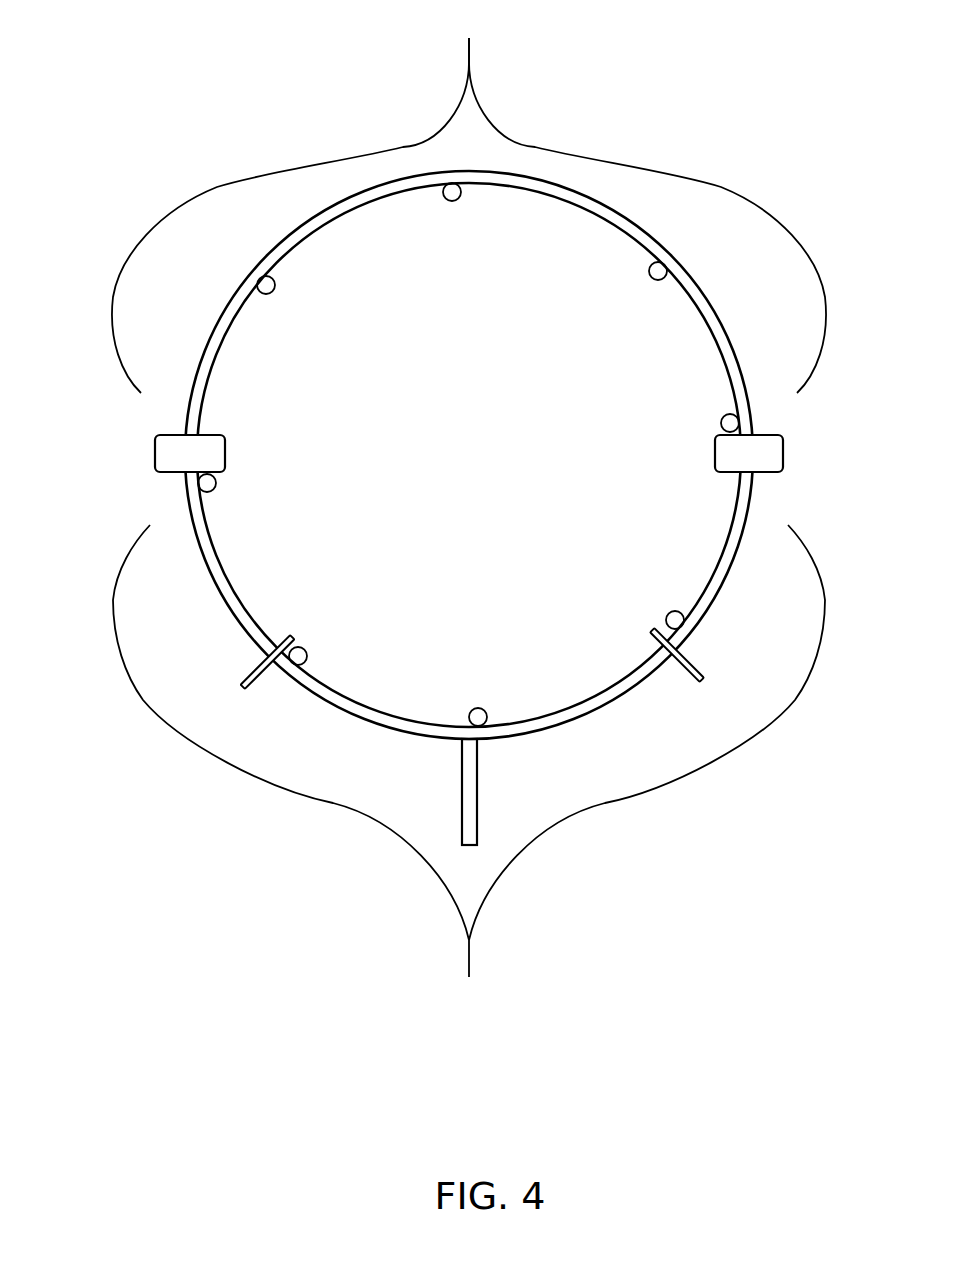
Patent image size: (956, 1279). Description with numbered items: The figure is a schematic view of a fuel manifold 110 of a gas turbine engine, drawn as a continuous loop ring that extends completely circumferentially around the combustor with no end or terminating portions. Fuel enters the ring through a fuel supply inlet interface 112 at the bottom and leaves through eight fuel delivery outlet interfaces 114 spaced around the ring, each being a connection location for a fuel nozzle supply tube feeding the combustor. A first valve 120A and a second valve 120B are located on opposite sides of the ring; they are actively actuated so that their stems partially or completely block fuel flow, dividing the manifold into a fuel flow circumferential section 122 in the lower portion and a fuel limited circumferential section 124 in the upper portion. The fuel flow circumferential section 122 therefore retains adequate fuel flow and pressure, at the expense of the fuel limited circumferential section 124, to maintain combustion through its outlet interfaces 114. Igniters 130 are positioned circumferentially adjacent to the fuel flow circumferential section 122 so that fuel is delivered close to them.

The fuel manifold 110 is at (166, 95).
The fuel supply inlet interface 112 is at (467, 815).
The fuel delivery outlet interfaces 114 is at (454, 205).
The first valve 120A is at (168, 440).
The second valve 120B is at (770, 460).
The fuel flow circumferential section 122 is at (469, 769).
The fuel limited circumferential section 124 is at (469, 199).
The igniter 130 is at (252, 684).